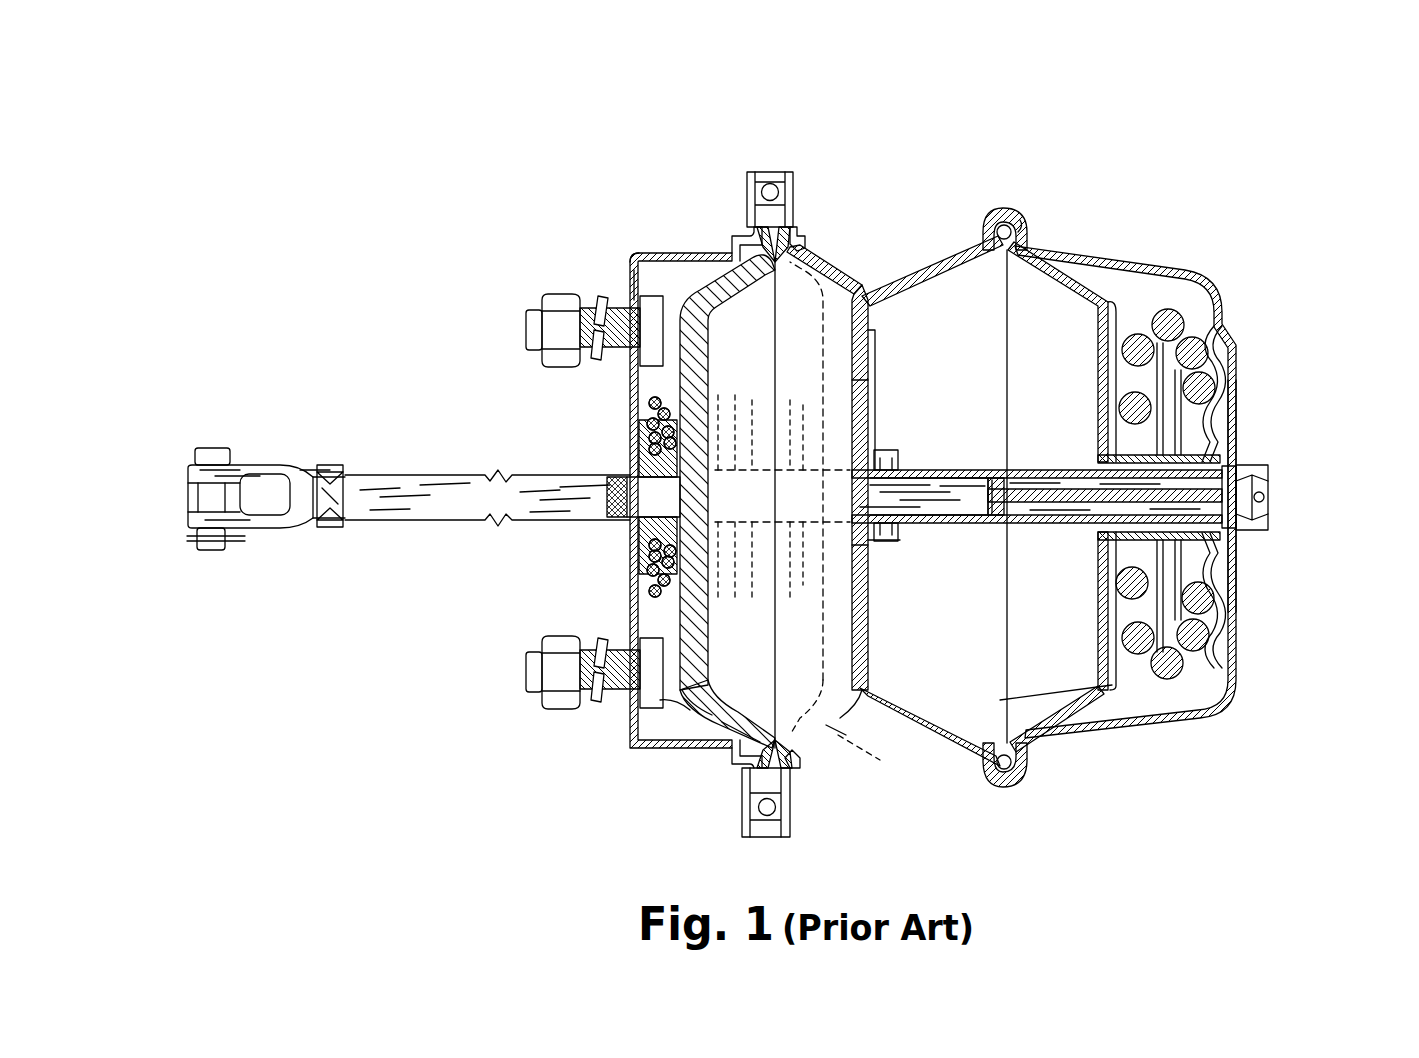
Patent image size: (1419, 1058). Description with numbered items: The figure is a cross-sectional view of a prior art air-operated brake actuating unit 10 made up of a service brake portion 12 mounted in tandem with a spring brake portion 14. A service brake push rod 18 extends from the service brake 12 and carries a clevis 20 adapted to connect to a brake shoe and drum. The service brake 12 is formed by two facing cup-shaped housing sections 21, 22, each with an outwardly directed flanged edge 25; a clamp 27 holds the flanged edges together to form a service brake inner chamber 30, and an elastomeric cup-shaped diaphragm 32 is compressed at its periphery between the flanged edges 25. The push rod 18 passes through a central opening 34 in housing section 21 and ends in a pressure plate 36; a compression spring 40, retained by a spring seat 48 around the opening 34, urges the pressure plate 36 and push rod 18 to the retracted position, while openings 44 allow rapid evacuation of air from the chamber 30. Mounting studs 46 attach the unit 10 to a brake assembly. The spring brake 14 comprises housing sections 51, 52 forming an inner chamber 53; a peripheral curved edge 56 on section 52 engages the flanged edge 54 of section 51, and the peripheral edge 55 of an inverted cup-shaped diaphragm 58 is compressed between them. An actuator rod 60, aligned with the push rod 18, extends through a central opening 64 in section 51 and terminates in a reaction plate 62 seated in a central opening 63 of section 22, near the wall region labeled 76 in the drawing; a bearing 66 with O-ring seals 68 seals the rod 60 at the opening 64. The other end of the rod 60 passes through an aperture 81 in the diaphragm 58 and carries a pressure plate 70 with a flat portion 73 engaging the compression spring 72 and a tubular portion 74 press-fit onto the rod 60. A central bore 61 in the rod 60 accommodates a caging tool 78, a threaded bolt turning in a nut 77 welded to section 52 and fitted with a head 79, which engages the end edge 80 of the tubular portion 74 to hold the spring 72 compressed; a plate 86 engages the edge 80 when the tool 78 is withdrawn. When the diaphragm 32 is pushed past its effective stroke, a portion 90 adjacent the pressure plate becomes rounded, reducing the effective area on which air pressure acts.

The brake actuating unit 10 is at (938, 132).
The service brake portion 12 is at (652, 238).
The spring brake portion 14 is at (1100, 232).
The service brake push rod 18 is at (405, 500).
The clevis 20 is at (237, 460).
The housing section 21 is at (630, 258).
The housing section 22 is at (797, 240).
The flanged edge 25 is at (748, 228).
The clamp 27 is at (746, 822).
The service brake inner chamber 30 is at (692, 292).
The diaphragm 32 is at (724, 720).
The central opening 34 is at (640, 457).
The pressure plate 36 is at (682, 712).
The compression spring 40 is at (648, 402).
The openings 44 is at (628, 272).
The mounting studs 46 is at (530, 330).
The spring seat 48 is at (640, 545).
The housing section 51 is at (938, 236).
The housing section 52 is at (1198, 273).
The inner chamber 53 is at (1062, 352).
The flanged edge 54 is at (1000, 250).
The peripheral edge 55 is at (1022, 236).
The peripheral curved edge 56 is at (1003, 210).
The diaphragm 58 is at (1095, 688).
The actuator rod 60 is at (917, 468).
The central bore 61 is at (933, 480).
The reaction plate 62 is at (860, 380).
The central opening 63 is at (860, 350).
The central opening 64 is at (868, 548).
The bearing 66 is at (878, 542).
The O-ring seals 68 is at (892, 458).
The pressure plate 70 is at (1114, 308).
The spring brake compression spring 72 is at (1214, 346).
The flat portion 73 is at (1100, 586).
The tubular portion 74 is at (1214, 446).
The piston wall 76 is at (866, 290).
The nut 77 is at (1240, 535).
The brake release or caging tool 78 is at (1093, 502).
The second nut or head 79 is at (1270, 512).
The end edge 80 is at (1240, 470).
The aperture 81 is at (1105, 456).
The plate 86 is at (996, 505).
The diaphragm portion 90 is at (700, 698).